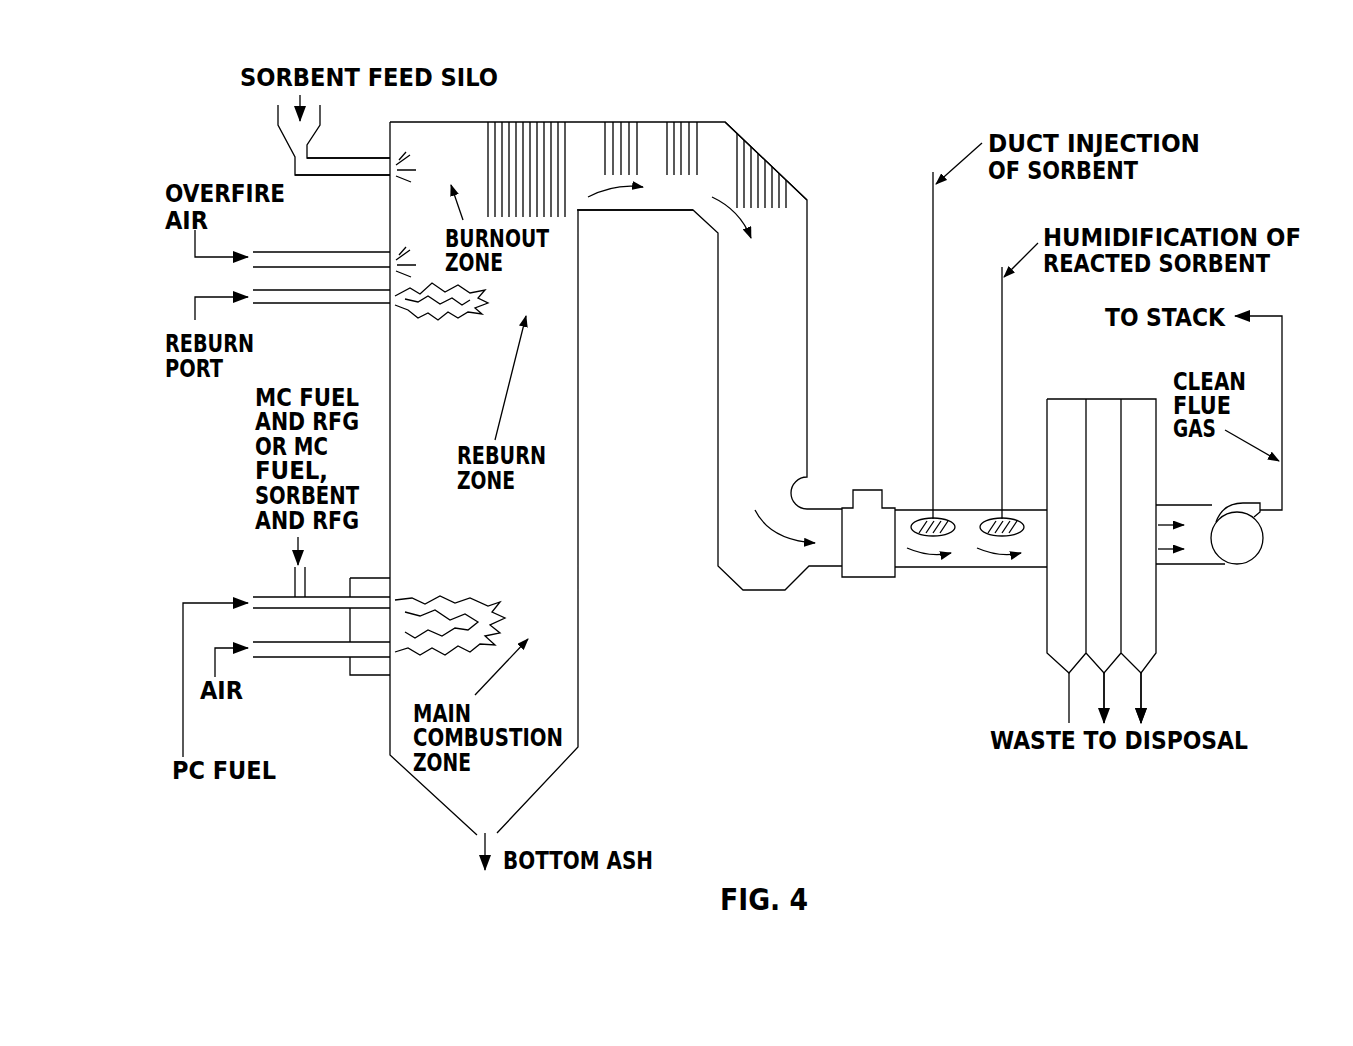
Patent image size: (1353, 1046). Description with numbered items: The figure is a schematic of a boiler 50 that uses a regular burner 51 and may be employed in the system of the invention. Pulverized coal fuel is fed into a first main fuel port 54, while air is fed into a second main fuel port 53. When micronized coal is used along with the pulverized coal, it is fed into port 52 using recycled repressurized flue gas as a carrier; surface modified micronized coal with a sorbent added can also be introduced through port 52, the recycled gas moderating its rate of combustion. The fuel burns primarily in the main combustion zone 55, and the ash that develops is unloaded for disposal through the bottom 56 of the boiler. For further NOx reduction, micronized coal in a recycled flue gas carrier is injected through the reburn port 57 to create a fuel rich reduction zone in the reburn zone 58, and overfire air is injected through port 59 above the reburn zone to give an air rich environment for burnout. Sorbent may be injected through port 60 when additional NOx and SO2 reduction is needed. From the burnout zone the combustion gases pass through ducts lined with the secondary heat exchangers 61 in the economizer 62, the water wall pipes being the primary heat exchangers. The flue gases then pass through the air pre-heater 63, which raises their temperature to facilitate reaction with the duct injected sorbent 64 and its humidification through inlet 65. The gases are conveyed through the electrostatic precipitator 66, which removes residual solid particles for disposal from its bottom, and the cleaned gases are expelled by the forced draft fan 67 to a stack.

The boiler 50 is at (575, 650).
The regular burner 51 is at (373, 675).
The port 52 is at (292, 586).
The second main fuel port 53 is at (298, 658).
The first main fuel port 54 is at (326, 597).
The main combustion zone 55 is at (462, 613).
The bottom 56 is at (500, 832).
The reburn port 57 is at (283, 303).
The reburn zone 58 is at (420, 310).
The overfire air port 59 is at (298, 253).
The sorbent port 60 is at (295, 160).
The secondary heat exchangers 61 is at (623, 130).
The economizer 62 is at (652, 130).
The air pre-heater 63 is at (862, 498).
The duct injected sorbent 64 is at (938, 517).
The inlet 65 is at (1006, 517).
The electrostatic precipitator 66 is at (1098, 408).
The forced draft fan 67 is at (1236, 565).